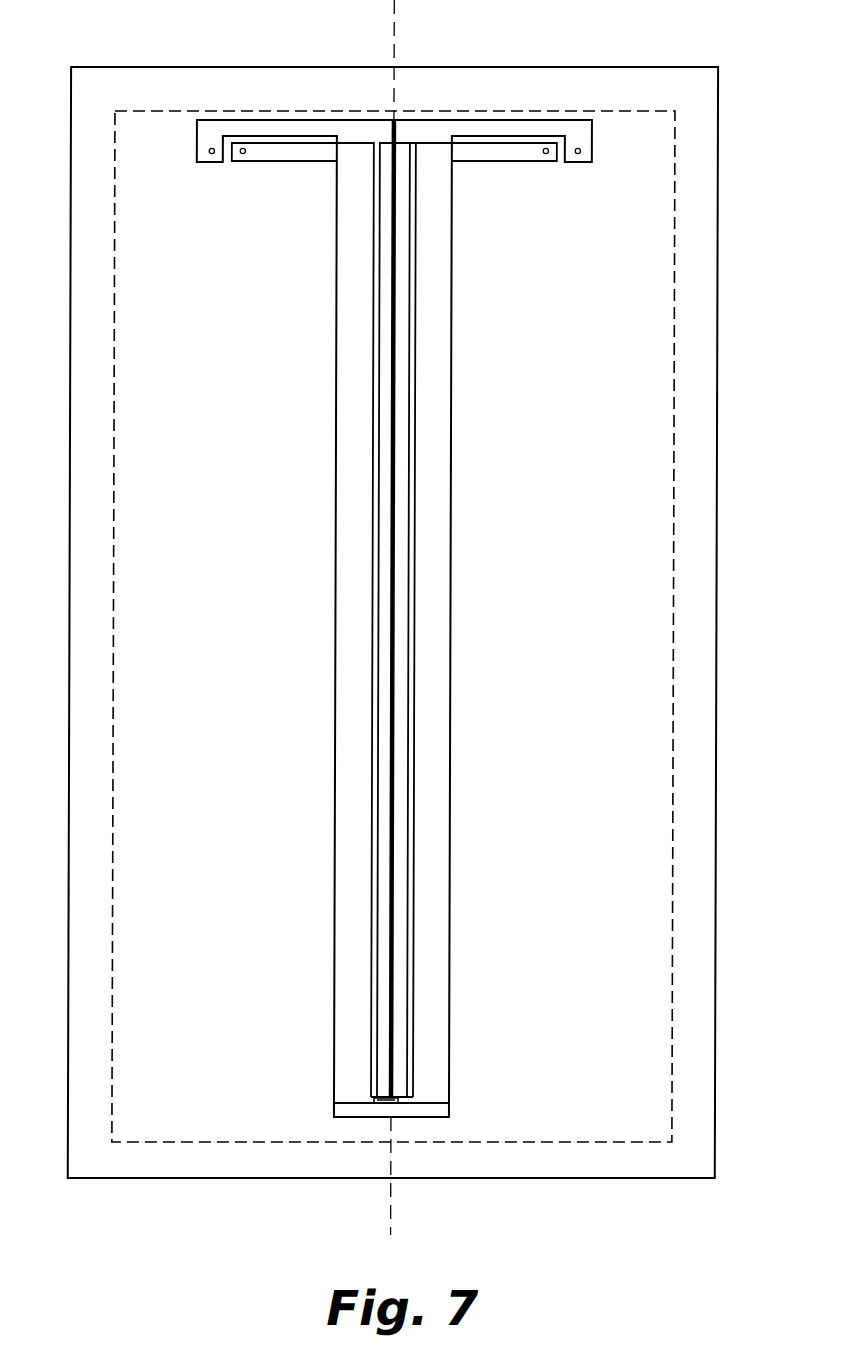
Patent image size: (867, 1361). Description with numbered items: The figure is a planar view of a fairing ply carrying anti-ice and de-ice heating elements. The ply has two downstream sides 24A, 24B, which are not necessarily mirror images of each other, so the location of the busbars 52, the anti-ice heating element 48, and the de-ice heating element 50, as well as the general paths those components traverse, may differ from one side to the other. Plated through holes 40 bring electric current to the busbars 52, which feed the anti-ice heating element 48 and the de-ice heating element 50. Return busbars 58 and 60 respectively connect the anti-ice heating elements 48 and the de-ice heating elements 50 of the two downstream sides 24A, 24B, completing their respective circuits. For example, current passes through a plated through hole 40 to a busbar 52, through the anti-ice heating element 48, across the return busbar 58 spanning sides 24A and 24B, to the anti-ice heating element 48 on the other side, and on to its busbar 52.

The downstream side of fairing ply 24A is at (512, 1145).
The downstream side of fairing ply 24B is at (217, 1152).
The plated through hole 40 is at (578, 155).
The anti-ice heating element 48 is at (402, 323).
The de-ice heating element 50 is at (437, 390).
The busbar 52 is at (443, 128).
The return busbar 58 is at (397, 1102).
The return busbar 60 is at (437, 1112).